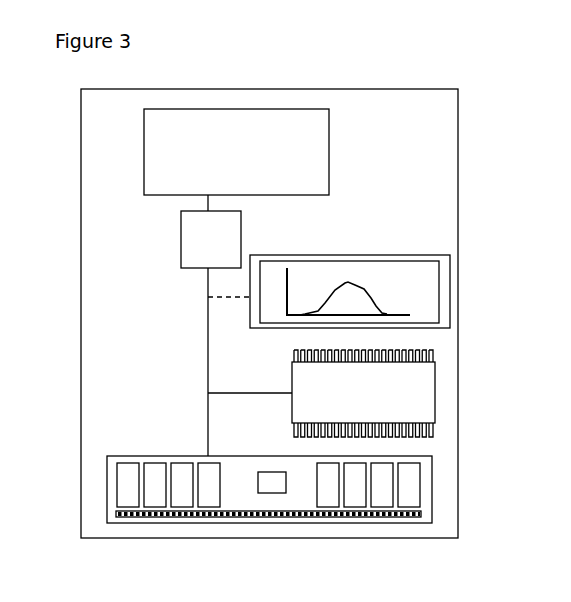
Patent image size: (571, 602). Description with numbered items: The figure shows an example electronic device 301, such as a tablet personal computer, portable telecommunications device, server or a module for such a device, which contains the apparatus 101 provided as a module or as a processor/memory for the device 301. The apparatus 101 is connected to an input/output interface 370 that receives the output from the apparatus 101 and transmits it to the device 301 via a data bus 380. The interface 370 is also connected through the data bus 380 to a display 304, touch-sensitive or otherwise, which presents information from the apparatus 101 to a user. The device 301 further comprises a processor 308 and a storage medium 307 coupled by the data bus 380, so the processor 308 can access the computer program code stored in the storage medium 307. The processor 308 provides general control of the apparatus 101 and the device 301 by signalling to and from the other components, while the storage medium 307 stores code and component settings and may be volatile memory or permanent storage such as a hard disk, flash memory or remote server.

The electronic device 301 is at (70, 510).
The apparatus 101 is at (253, 164).
The input/output interface 370 is at (228, 249).
The data bus 380 is at (207, 356).
The display 304 is at (362, 272).
The processor 308 is at (384, 406).
The storage medium 307 is at (238, 496).